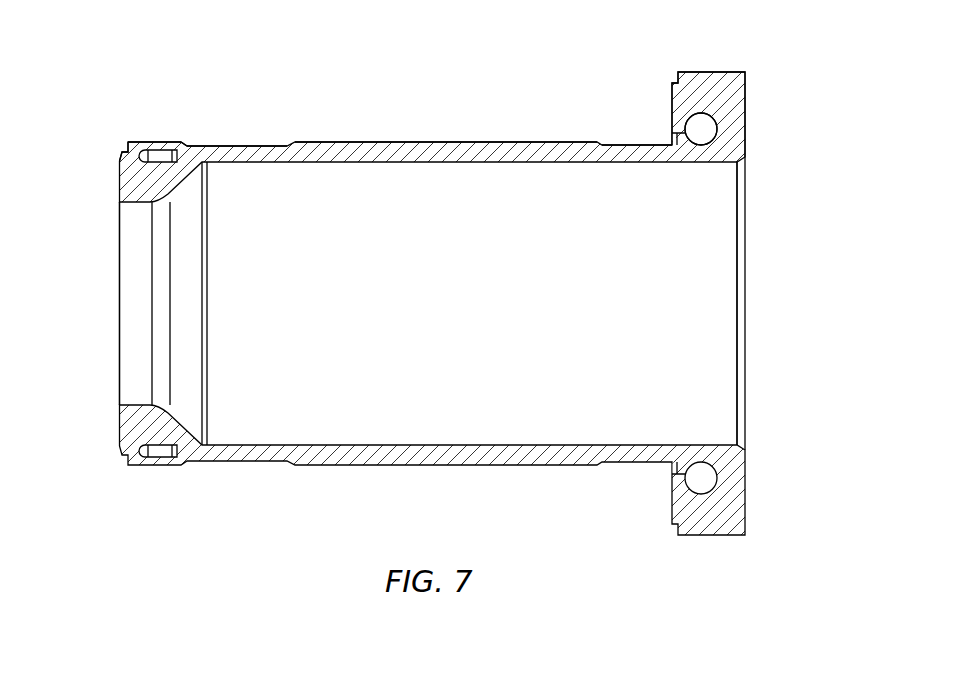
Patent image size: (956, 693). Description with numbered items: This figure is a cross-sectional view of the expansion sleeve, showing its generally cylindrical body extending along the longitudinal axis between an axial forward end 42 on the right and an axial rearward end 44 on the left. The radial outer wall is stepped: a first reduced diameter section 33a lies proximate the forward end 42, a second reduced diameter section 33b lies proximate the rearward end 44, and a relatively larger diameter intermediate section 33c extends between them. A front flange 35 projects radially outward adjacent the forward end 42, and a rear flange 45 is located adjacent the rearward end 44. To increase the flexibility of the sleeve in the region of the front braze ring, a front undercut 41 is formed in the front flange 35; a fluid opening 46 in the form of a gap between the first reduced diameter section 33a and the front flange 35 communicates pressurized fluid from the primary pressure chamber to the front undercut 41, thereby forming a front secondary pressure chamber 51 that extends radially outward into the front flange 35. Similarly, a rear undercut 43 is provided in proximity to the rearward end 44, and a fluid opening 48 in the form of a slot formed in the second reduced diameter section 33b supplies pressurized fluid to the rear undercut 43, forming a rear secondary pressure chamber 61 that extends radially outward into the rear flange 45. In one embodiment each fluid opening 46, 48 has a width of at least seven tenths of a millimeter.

The axial rearward end 44 is at (102, 183).
The rear flange 45 is at (117, 153).
The rear secondary pressure chamber 61 is at (152, 156).
The rear undercut 43 is at (164, 141).
The fluid opening 48 is at (178, 151).
The second reduced diameter section 33b is at (255, 144).
The intermediate section 33c is at (445, 140).
The first reduced diameter section 33a is at (627, 143).
The fluid opening 46 is at (670, 137).
The front undercut 41 is at (698, 111).
The front secondary pressure chamber 51 is at (705, 126).
The front flange 35 is at (764, 111).
The axial forward end 42 is at (762, 188).